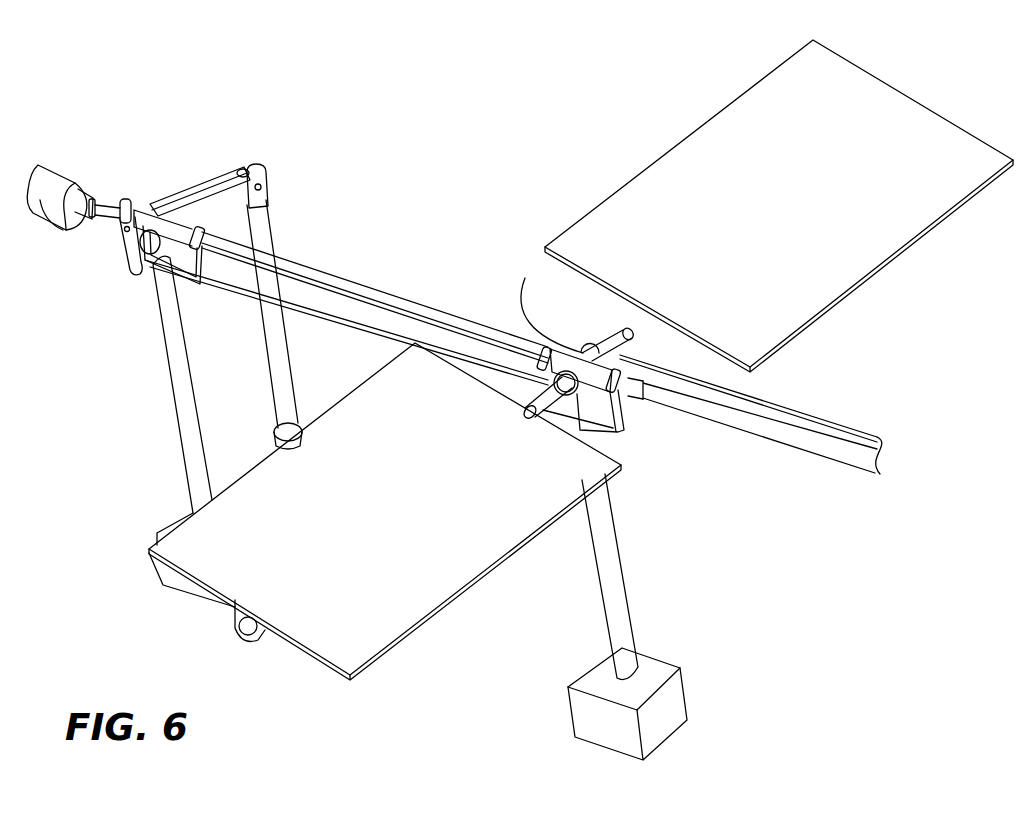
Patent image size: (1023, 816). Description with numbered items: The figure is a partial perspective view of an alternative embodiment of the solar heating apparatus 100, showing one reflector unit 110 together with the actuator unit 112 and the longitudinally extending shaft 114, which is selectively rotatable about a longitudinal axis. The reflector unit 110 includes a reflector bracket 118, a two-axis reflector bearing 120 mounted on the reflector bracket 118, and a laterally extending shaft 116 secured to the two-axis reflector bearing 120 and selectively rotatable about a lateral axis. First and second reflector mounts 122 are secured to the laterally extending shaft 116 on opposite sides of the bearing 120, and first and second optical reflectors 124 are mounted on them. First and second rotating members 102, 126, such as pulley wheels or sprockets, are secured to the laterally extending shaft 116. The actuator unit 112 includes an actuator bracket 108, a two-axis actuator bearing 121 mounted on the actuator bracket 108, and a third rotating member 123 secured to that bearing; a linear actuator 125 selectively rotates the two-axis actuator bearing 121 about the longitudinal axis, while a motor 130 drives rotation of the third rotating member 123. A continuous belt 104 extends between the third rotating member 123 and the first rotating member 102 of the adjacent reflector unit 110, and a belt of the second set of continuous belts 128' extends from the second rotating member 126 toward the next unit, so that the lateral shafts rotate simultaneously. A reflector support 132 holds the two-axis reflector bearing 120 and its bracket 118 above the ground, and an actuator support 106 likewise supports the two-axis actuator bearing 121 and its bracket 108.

The solar heating apparatus 100 is at (572, 112).
The first rotating member 102 is at (580, 400).
The continuous belt 104 is at (322, 318).
The actuator support 106 is at (176, 396).
The actuator bracket 108 is at (208, 290).
The reflector unit 110 is at (850, 313).
The actuator unit 112 is at (222, 183).
The longitudinally extending shaft 114 is at (312, 264).
The laterally extending shaft 116 is at (623, 327).
The reflector bracket 118 is at (630, 440).
The two-axis reflector bearing 120 is at (630, 400).
The two-axis actuator bearing 121 is at (130, 198).
The reflector mount 122 is at (636, 312).
The third rotating member 123 is at (148, 262).
The optical reflector 124 is at (898, 96).
The linear actuator 125 is at (268, 190).
The second rotating member 126 is at (540, 340).
The second set of continuous belts 128' is at (802, 381).
The motor 130 is at (62, 170).
The reflector support 132 is at (650, 667).